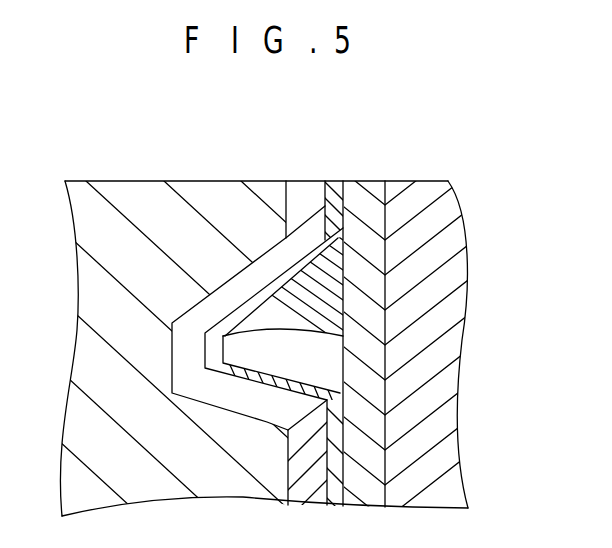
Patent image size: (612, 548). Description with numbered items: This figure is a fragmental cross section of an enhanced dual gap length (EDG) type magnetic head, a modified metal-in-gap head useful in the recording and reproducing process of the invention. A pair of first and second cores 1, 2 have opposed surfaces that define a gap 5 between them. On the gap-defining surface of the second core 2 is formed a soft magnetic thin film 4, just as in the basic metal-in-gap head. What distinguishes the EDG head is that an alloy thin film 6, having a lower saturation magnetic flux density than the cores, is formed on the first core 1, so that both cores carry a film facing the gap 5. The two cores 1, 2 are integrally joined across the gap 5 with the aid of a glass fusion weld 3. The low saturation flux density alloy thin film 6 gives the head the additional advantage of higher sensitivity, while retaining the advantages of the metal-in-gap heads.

The first core 1 is at (95, 380).
The second core 2 is at (457, 268).
The glass fusion weld 3 is at (340, 333).
The soft magnetic thin film 4 is at (377, 200).
The gap 5 is at (337, 200).
The alloy thin film 6 is at (291, 197).